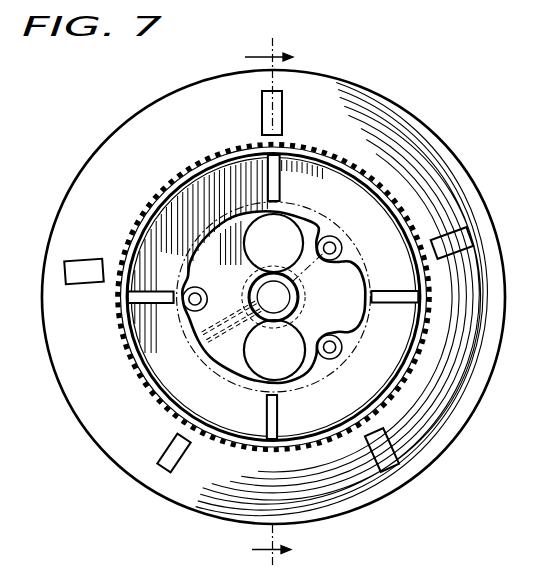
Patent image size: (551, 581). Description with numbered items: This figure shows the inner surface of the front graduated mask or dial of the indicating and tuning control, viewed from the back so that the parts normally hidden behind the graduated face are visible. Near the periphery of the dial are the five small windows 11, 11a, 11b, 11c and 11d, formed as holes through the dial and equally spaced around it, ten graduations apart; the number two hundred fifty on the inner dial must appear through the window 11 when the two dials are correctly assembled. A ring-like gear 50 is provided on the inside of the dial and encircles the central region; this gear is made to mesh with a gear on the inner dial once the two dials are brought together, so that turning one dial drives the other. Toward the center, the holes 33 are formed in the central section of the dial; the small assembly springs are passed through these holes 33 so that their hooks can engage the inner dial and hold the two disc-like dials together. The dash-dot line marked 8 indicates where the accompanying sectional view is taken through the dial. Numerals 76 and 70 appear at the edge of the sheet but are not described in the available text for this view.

The section line 8— 8 is at (269, 298).
The window 11 is at (285, 106).
The window 11a is at (88, 284).
The window 11b is at (180, 464).
The window 11c is at (398, 447).
The window 11d is at (456, 230).
The holes 33 is at (283, 224).
The ring-like gear 50 is at (357, 138).
The element 76 is at (422, 572).
The element 70 is at (507, 574).